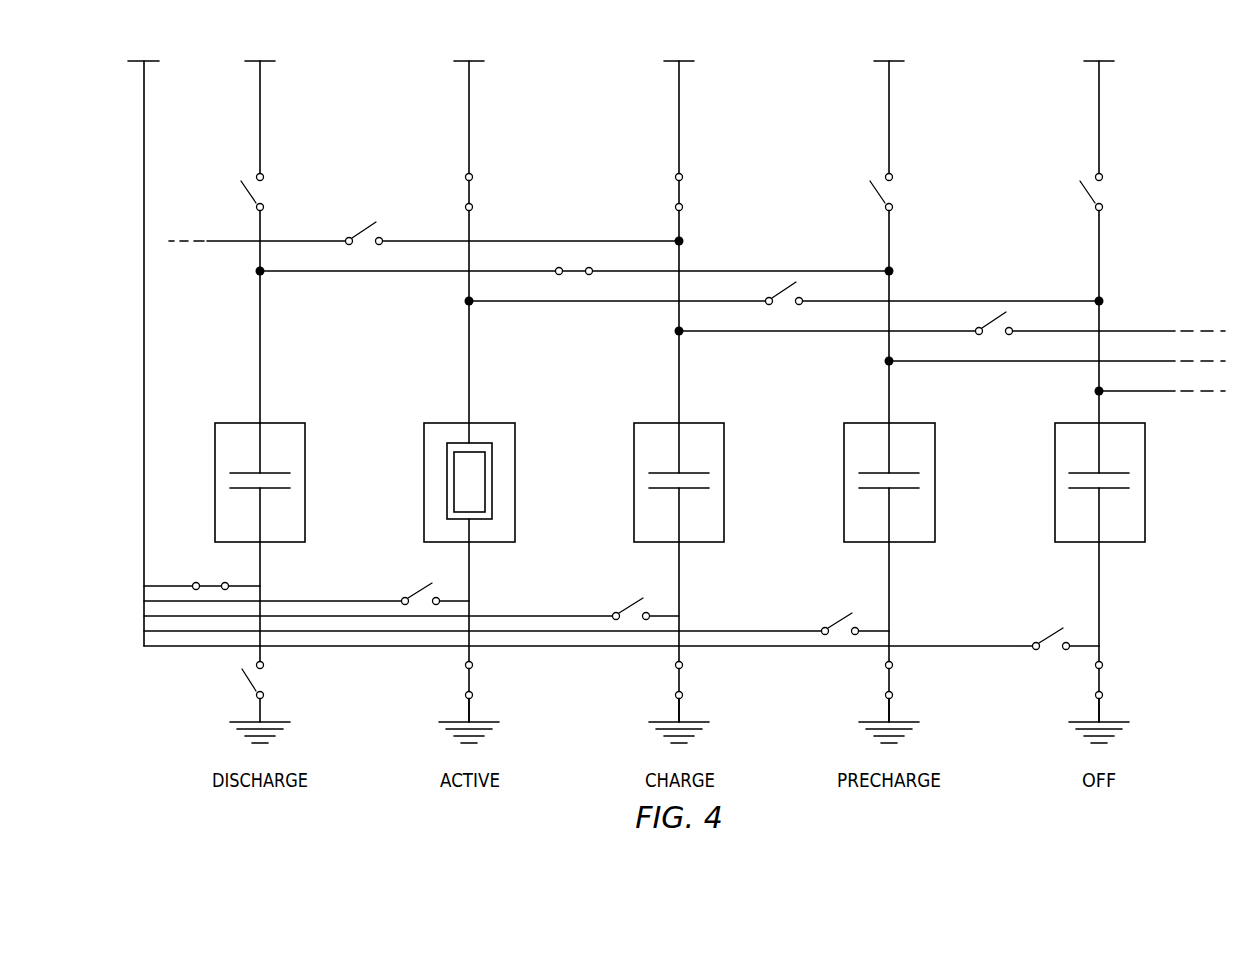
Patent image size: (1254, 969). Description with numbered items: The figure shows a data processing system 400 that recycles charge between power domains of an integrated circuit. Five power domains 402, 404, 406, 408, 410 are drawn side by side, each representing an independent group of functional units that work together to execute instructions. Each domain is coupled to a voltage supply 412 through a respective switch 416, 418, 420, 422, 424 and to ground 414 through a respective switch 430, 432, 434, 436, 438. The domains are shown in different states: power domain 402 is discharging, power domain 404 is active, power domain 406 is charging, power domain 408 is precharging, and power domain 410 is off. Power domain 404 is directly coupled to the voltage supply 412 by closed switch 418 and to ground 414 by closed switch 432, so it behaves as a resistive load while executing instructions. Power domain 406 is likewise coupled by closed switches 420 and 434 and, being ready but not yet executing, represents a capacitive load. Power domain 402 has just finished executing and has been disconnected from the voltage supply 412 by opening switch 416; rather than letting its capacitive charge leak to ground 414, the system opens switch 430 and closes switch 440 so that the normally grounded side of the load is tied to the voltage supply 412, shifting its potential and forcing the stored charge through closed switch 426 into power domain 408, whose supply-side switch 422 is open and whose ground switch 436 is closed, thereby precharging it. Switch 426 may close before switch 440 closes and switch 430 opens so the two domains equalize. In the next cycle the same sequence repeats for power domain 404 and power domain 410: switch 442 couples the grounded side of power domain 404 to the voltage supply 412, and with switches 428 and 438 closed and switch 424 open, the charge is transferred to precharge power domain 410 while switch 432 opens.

The data processing system 400 is at (1186, 94).
The power domain 402 is at (230, 421).
The power domain 404 is at (440, 421).
The power domain 406 is at (650, 421).
The power domain 408 is at (860, 421).
The power domain 410 is at (1070, 421).
The voltage supply 412 is at (148, 61).
The ground 414 is at (237, 721).
The switch 416 is at (274, 197).
The switch 418 is at (454, 195).
The switch 420 is at (666, 195).
The switch 422 is at (876, 195).
The switch 424 is at (1085, 191).
The switch 426 is at (572, 265).
The switch 428 is at (787, 290).
The switch 430 is at (275, 682).
The switch 432 is at (484, 682).
The switch 434 is at (694, 682).
The switch 436 is at (904, 682).
The switch 438 is at (1114, 682).
The switch 440 is at (215, 567).
The switch 442 is at (418, 583).